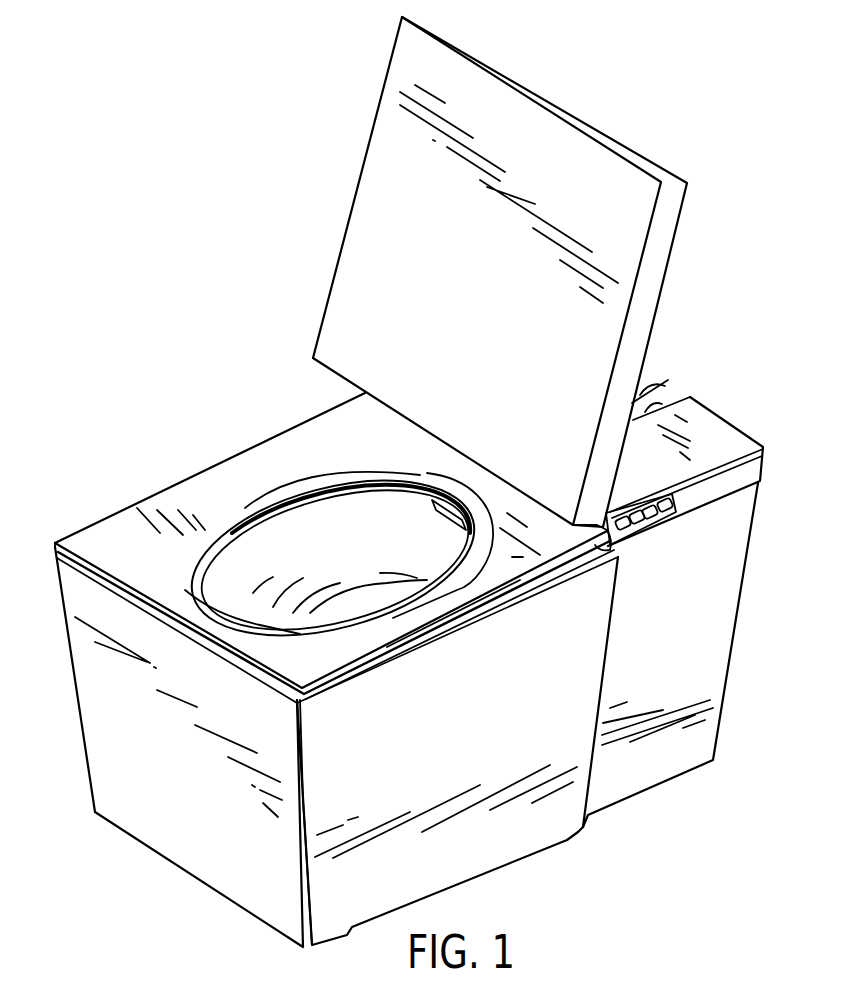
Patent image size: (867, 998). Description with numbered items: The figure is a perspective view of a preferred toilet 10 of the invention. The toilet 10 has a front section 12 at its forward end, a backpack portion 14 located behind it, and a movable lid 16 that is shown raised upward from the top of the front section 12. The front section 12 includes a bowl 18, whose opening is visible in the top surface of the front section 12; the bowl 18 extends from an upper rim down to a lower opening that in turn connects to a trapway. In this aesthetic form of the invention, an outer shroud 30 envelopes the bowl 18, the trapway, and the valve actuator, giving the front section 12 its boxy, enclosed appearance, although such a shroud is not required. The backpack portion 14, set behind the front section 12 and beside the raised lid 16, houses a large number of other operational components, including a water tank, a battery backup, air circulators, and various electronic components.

The toilet 10 is at (171, 148).
The front section 12 is at (110, 738).
The backpack portion 14 is at (710, 630).
The movable lid 16 is at (658, 273).
The bowl 18 is at (331, 557).
The outer shroud 30 is at (473, 757).